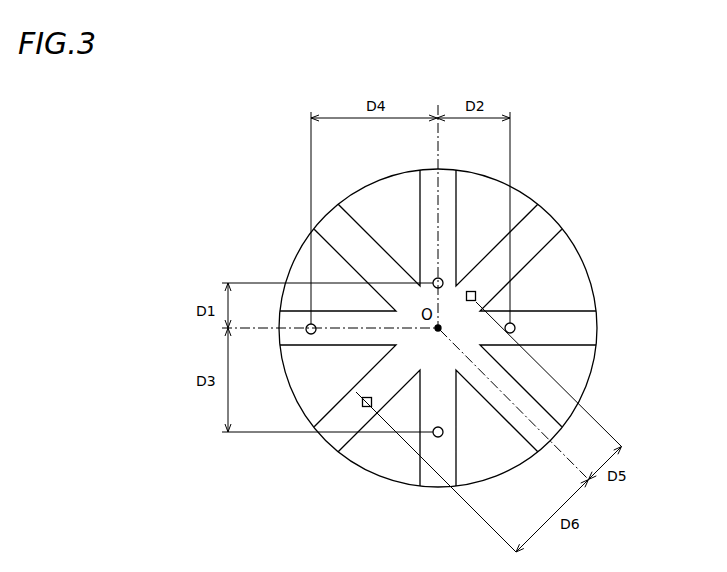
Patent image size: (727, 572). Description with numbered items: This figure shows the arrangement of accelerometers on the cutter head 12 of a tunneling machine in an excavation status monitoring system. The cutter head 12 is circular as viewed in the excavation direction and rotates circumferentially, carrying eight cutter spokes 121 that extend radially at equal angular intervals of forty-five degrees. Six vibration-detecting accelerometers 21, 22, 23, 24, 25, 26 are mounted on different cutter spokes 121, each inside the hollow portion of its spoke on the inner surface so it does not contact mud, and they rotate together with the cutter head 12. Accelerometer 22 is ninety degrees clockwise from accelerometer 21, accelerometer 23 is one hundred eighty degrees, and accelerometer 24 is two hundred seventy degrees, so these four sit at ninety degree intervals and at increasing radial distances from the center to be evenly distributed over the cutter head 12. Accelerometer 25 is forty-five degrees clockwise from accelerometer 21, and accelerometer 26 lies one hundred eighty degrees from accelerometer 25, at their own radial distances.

The cutter head 12 is at (594, 204).
The cutter spokes 121 is at (334, 218).
The accelerometer 21 is at (434, 279).
The accelerometer 22 is at (512, 322).
The accelerometer 23 is at (444, 432).
The accelerometer 24 is at (311, 335).
The accelerometer 25 is at (471, 290).
The accelerometer 26 is at (362, 397).